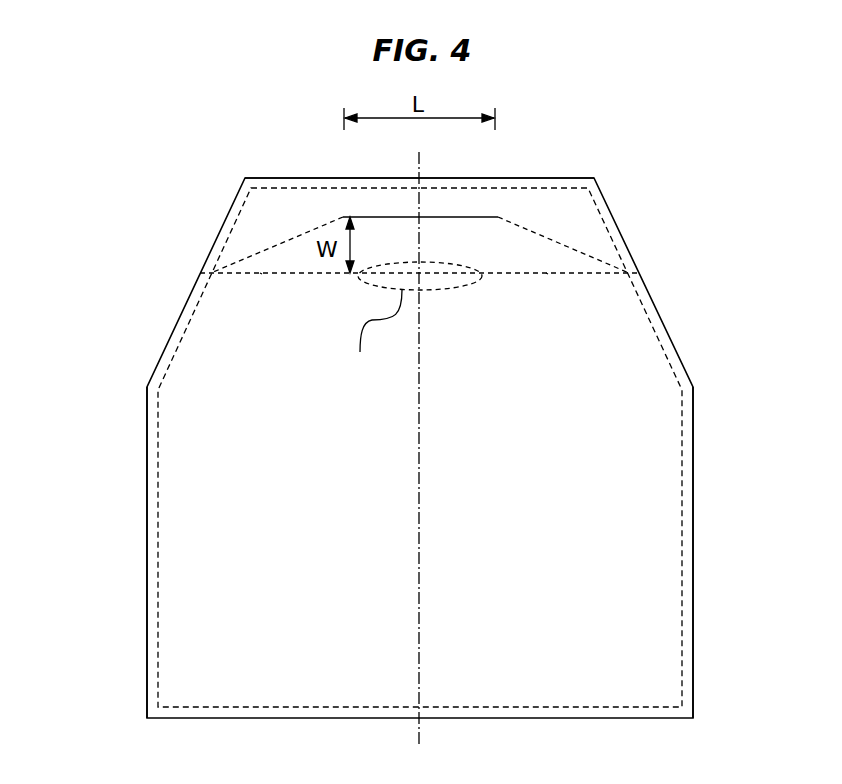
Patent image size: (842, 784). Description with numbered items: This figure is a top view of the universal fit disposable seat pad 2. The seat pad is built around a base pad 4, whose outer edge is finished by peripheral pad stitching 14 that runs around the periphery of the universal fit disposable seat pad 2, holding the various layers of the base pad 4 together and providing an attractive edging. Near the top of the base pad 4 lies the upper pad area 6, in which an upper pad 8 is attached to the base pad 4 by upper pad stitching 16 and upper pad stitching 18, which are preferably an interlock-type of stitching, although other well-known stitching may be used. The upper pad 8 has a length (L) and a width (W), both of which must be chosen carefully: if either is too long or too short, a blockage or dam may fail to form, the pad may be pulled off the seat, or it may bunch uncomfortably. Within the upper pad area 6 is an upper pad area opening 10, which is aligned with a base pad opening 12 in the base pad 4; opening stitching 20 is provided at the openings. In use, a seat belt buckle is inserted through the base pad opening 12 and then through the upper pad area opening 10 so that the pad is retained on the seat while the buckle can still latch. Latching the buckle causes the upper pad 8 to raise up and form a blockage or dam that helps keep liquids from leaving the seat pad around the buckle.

The universal fit disposable seat pad 2 is at (140, 375).
The base pad 4 is at (446, 545).
The upper pad area 6 is at (545, 215).
The upper pad 8 is at (560, 253).
The upper pad area opening 10 is at (377, 217).
The base pad opening 12 is at (420, 277).
The peripheral pad stitching 14 is at (147, 538).
The upper pad stitching 16 is at (260, 273).
The upper pad stitching 18 is at (277, 243).
The opening stitching 20 is at (372, 340).